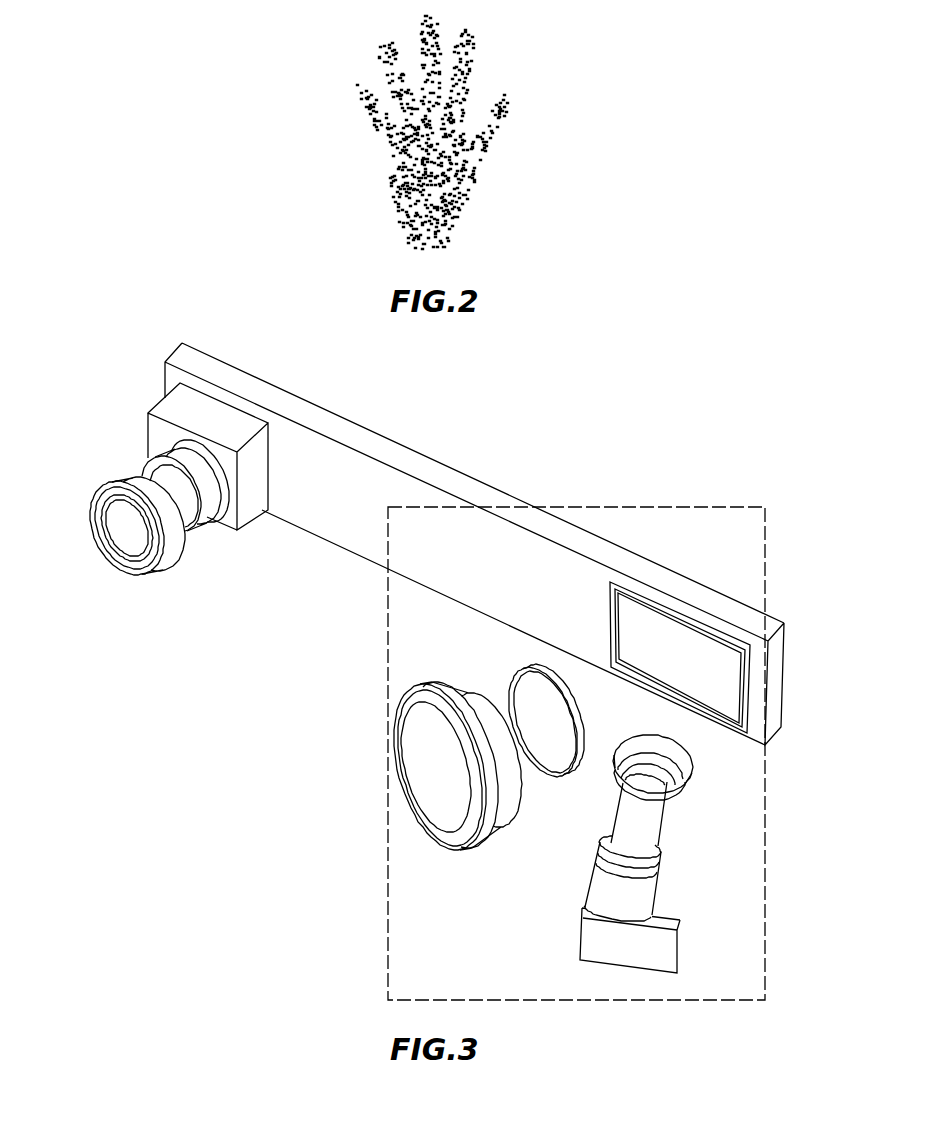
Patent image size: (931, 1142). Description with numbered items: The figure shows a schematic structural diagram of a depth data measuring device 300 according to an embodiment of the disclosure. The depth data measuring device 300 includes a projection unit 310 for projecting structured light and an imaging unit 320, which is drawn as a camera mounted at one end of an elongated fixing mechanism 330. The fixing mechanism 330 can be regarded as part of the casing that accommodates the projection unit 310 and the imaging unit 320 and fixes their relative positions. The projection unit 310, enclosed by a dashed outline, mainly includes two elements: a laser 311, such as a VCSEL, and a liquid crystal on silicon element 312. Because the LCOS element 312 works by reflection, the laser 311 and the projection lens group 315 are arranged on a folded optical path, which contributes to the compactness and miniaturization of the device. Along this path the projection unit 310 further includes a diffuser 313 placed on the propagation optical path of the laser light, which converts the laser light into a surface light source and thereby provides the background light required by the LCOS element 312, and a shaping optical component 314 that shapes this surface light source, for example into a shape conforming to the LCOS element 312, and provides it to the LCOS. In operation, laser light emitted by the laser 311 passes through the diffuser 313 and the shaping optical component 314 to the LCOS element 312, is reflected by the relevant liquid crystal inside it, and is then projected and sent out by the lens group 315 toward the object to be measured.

The depth data measuring device 300 is at (729, 391).
The projection unit 310 is at (642, 505).
The laser 311 is at (648, 901).
The liquid crystal on silicon (LCOS) element 312 is at (618, 642).
The diffuser 313 is at (660, 852).
The shaping optical component 314 is at (665, 812).
The lens group 315 is at (493, 680).
The imaging unit 320 is at (170, 545).
The fixing mechanism 330 is at (367, 441).